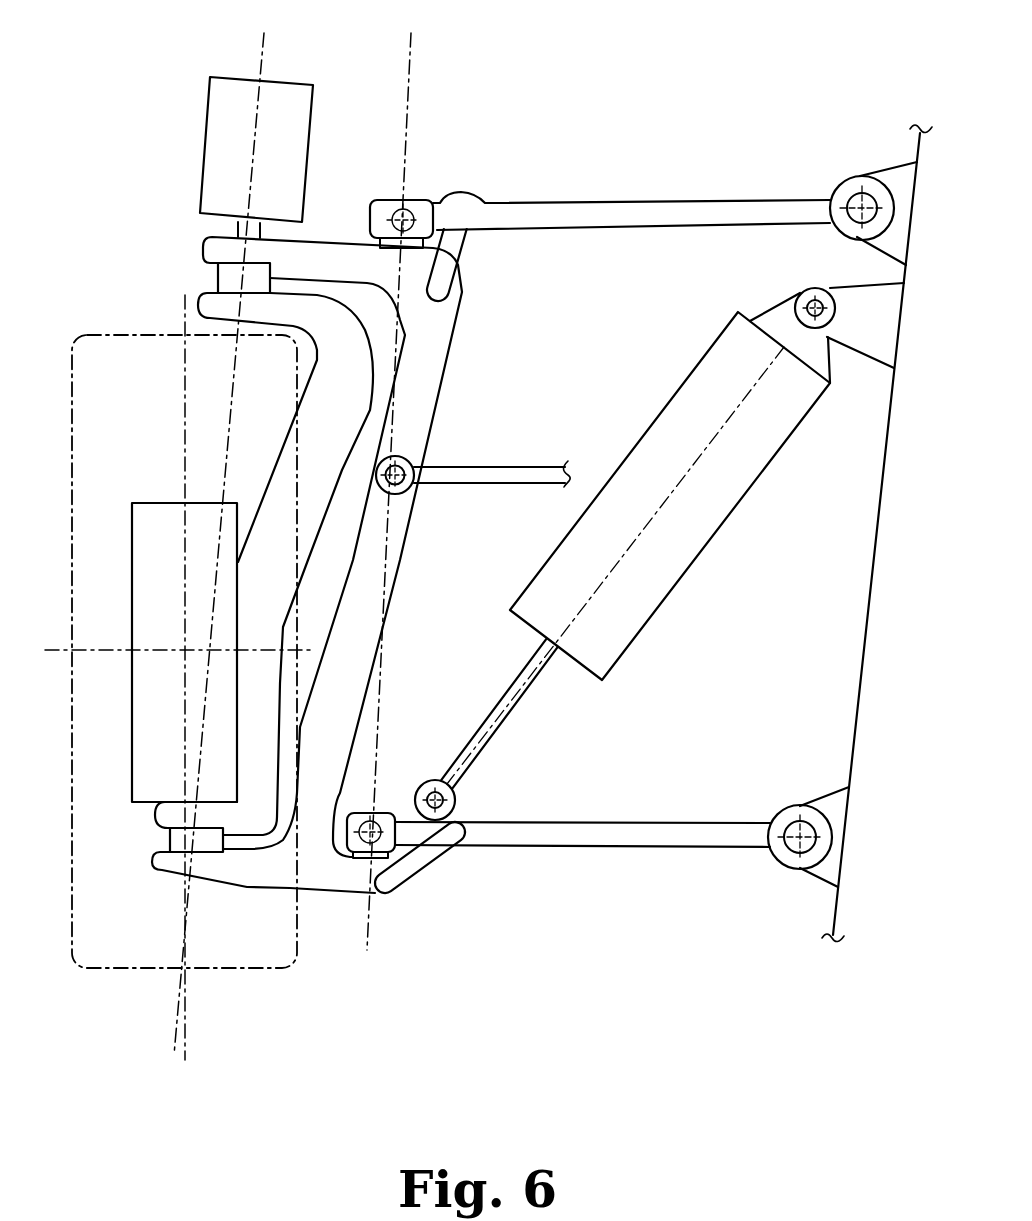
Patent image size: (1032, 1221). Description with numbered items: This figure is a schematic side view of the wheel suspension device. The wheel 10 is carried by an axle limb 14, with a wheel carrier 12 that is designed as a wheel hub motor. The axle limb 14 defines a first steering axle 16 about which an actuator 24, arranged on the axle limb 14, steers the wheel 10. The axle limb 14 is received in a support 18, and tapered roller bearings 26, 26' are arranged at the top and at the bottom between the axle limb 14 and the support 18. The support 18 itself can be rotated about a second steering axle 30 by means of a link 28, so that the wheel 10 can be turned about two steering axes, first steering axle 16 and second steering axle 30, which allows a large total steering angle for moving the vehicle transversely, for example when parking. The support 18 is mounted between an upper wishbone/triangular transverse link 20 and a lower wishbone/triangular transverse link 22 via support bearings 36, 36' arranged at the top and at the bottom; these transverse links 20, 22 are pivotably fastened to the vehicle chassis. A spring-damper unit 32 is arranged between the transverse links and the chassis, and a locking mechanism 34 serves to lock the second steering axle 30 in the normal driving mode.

The wheel 10 is at (98, 335).
The wheel carrier 12 is at (150, 558).
The axle limb 14 is at (303, 305).
The first steering axle 16 is at (262, 45).
The support 18 is at (333, 860).
The upper wishbone/triangular transverse link 20 is at (652, 214).
The lower wishbone/triangular transverse link 22 is at (624, 846).
The actuator 24 is at (217, 148).
The tapered roller bearing 26 is at (208, 279).
The tapered roller bearing 26' is at (119, 841).
The link 28 is at (513, 471).
The second steering axle 30 is at (410, 45).
The spring-damper unit 32 is at (713, 495).
The locking mechanism 34 is at (460, 253).
The support bearing 36 is at (387, 200).
The support bearing 36' is at (383, 882).